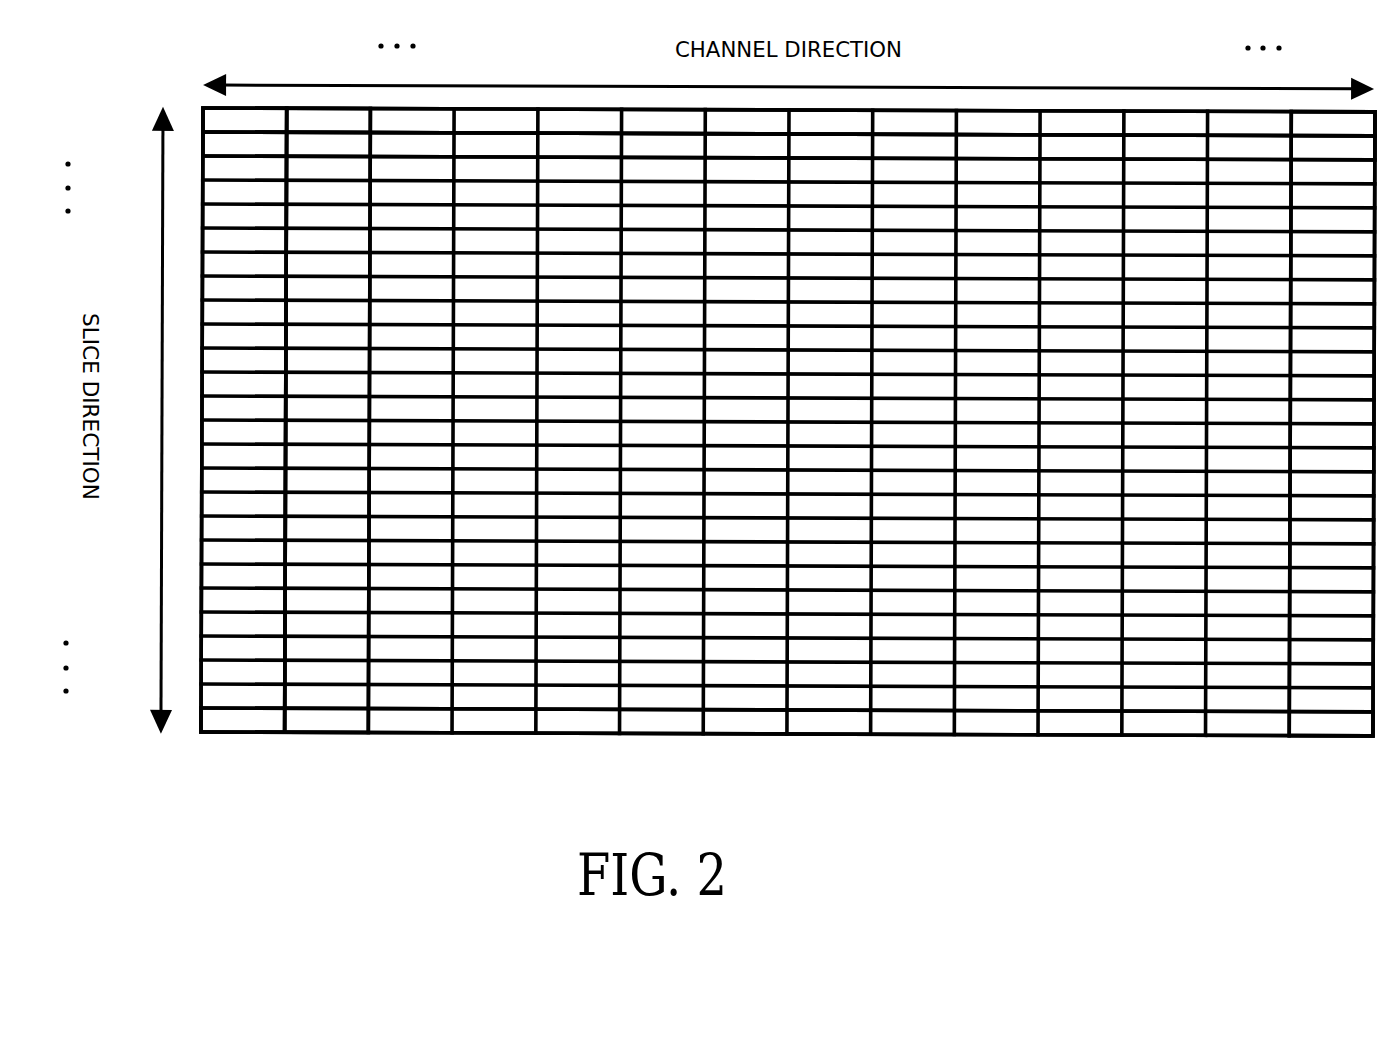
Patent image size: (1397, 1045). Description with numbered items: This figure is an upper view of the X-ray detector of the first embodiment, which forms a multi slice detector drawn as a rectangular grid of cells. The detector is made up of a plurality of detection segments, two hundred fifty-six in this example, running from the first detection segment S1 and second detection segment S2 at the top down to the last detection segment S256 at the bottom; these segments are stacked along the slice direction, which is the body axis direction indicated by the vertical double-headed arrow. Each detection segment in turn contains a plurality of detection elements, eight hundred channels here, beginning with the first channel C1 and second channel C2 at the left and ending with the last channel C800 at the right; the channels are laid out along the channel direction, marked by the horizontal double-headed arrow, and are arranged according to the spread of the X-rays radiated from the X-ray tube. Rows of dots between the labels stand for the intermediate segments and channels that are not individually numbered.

The channel C1 is at (244, 384).
The channel C2 is at (328, 384).
The channel C800 is at (1332, 389).
The detection segment S1 is at (715, 122).
The detection segment S2 is at (715, 145).
The detection segment S256 is at (713, 722).